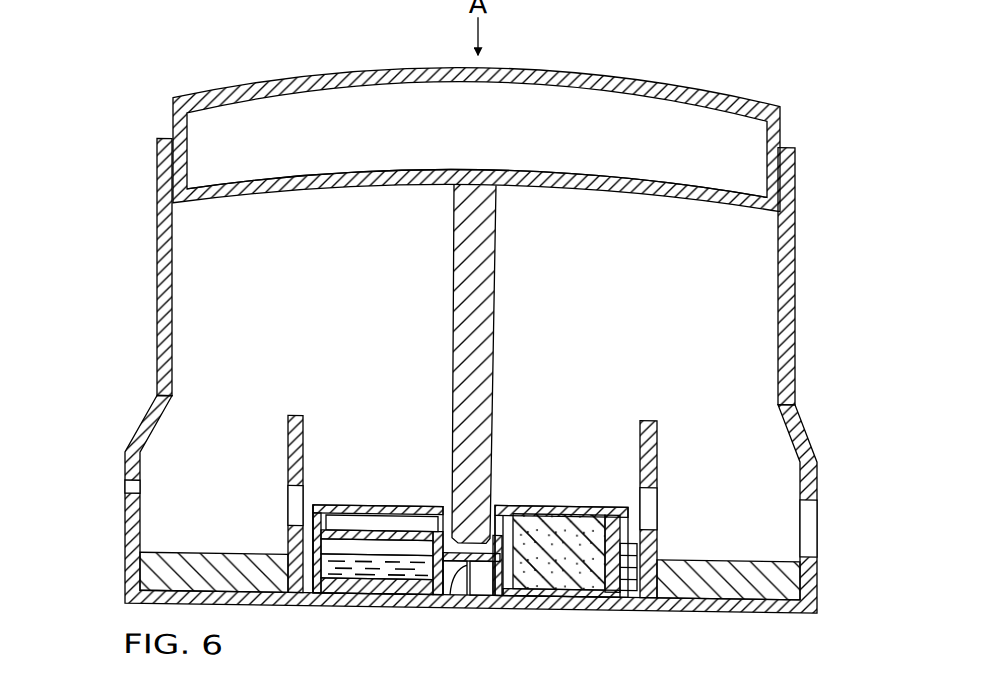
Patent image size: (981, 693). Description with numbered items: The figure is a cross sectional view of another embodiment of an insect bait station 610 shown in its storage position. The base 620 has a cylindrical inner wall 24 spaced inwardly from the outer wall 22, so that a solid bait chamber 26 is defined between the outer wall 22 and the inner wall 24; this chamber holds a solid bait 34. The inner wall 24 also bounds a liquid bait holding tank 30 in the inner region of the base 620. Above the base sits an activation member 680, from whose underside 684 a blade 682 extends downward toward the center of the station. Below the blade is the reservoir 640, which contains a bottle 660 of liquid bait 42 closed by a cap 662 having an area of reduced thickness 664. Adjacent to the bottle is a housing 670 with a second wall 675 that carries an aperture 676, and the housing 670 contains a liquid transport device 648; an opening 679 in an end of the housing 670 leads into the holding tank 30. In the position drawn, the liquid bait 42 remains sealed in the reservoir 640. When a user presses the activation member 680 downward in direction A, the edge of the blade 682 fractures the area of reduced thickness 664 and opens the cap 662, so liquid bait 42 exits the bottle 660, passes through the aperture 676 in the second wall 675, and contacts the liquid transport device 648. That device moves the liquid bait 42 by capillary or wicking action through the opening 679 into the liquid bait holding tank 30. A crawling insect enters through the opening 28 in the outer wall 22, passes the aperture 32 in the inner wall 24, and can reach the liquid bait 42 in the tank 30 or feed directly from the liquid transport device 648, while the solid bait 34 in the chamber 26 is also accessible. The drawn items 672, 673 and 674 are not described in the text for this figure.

The insect bait station 610 is at (125, 208).
The base 620 is at (456, 503).
The activation member 680 is at (628, 66).
The underside 684 is at (260, 190).
The blade 682 is at (472, 255).
The liquid bait holding tank 30 is at (322, 412).
The reservoir 640 is at (473, 540).
The bottle 660 is at (473, 540).
The housing 670 is at (337, 500).
The upper chamber 672 is at (385, 499).
The side wall 673 is at (437, 523).
The cap 662 is at (428, 569).
The area of reduced thickness 664 is at (437, 575).
The aperture 676 is at (445, 470).
The second wall 675 is at (497, 511).
The absorbent housing 674 is at (573, 539).
The liquid transport device 648 is at (548, 514).
The opening 679 is at (623, 560).
The liquid bait 42 is at (353, 567).
The inner wall 24 is at (679, 509).
The aperture 32 is at (650, 497).
The outer wall 22 is at (812, 488).
The solid bait chamber 26 is at (168, 476).
The opening 28 is at (110, 525).
The solid bait 34 is at (145, 578).